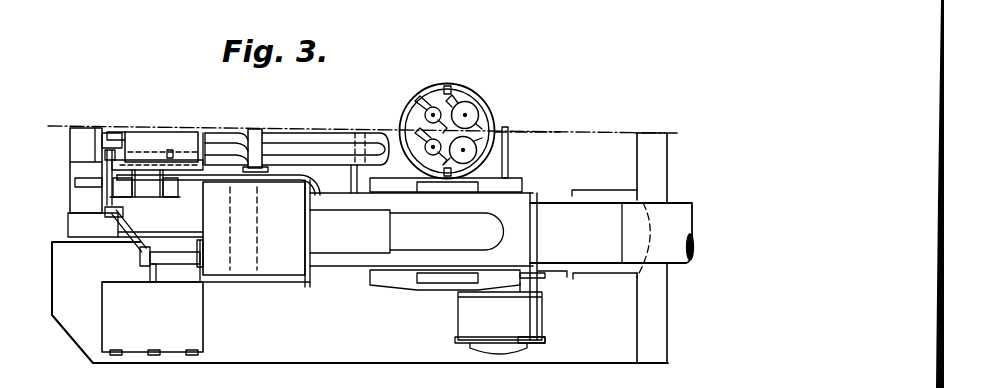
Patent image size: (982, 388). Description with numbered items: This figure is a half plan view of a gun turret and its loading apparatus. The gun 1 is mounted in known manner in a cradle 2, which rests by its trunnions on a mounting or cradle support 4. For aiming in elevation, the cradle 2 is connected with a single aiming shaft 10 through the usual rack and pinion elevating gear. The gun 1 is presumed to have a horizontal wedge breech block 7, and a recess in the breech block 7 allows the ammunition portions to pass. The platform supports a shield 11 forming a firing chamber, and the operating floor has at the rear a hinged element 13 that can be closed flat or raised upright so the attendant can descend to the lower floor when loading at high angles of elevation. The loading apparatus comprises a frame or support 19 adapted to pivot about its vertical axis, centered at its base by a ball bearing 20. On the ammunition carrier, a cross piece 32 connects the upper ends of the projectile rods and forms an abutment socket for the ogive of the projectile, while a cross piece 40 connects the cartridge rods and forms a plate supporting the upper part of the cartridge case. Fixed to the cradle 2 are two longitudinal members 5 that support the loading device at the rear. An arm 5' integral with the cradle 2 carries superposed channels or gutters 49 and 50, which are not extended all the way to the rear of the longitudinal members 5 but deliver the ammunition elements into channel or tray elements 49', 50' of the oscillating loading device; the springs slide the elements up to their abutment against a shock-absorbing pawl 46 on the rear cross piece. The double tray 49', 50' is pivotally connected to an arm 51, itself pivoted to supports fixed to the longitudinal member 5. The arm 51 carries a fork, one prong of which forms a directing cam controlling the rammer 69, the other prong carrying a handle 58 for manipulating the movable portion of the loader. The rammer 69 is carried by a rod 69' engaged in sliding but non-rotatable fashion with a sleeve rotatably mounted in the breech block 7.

The gun 1 is at (660, 208).
The cradle 2 is at (528, 195).
The cradle support 4 is at (517, 182).
The longitudinal member 5 is at (218, 205).
The arm 5' is at (255, 135).
The breech block 7 is at (290, 265).
The aiming shaft 10 is at (508, 145).
The shield 11 is at (358, 363).
The hinged element 13 is at (198, 328).
The swivelling frame 19 is at (435, 90).
The ball bearing 20 is at (487, 105).
The cross piece 32 is at (420, 143).
The cross piece 40 is at (468, 113).
The shock-absorbing pawl 46 is at (113, 142).
The channel 49 is at (325, 146).
The tray element 49' is at (155, 132).
The channel 50 is at (265, 132).
The tray element 50' is at (152, 129).
The arm 51 is at (150, 182).
The handle 58 is at (87, 182).
The rammer 69 is at (126, 240).
The rod 69' is at (175, 277).